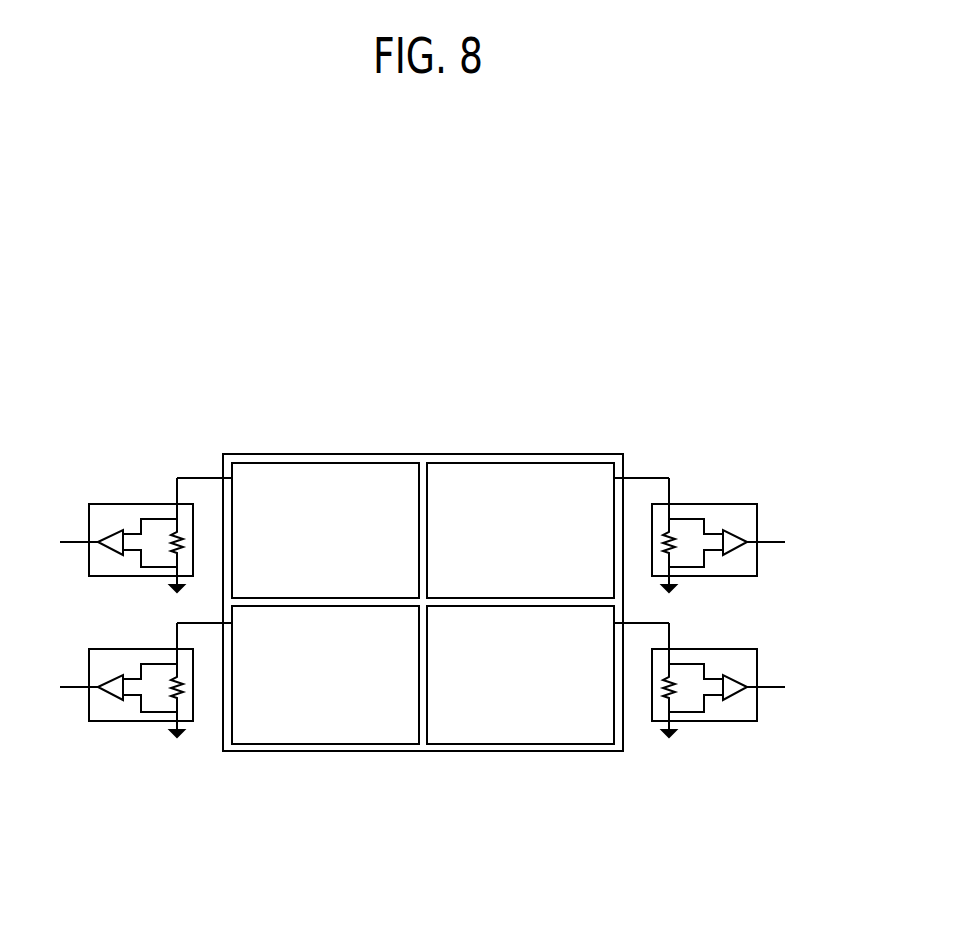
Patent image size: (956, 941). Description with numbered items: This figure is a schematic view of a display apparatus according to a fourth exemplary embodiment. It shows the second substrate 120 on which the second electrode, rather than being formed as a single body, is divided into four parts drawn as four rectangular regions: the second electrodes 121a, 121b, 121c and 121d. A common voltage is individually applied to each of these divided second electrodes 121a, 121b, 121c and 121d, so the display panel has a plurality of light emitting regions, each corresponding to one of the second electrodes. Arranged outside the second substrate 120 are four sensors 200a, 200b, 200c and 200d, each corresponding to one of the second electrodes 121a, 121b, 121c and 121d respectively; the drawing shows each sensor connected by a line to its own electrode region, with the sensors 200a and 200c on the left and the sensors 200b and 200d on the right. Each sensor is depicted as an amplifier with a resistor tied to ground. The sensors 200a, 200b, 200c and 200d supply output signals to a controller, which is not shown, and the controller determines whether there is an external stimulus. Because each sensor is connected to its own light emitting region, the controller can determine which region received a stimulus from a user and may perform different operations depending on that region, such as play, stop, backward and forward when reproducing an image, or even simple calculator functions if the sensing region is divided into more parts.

The second substrate 120 is at (421, 454).
The second electrode 121a is at (325, 463).
The second electrode 121b is at (512, 463).
The second electrode 121c is at (323, 744).
The second electrode 121d is at (530, 744).
The sensor 200a is at (121, 504).
The sensor 200b is at (720, 504).
The sensor 200c is at (121, 721).
The sensor 200d is at (722, 721).